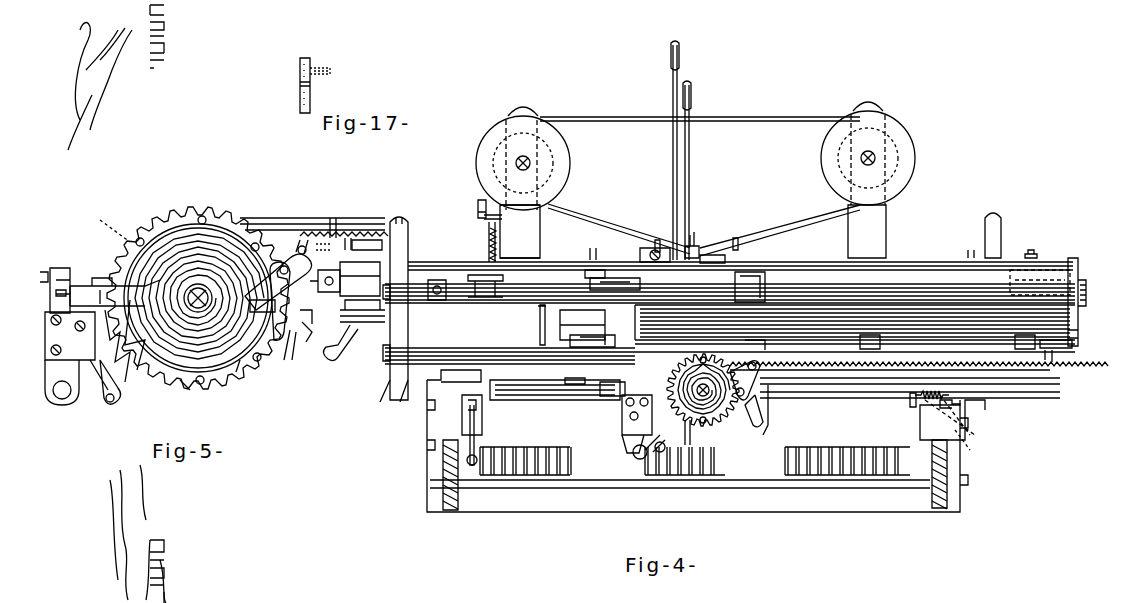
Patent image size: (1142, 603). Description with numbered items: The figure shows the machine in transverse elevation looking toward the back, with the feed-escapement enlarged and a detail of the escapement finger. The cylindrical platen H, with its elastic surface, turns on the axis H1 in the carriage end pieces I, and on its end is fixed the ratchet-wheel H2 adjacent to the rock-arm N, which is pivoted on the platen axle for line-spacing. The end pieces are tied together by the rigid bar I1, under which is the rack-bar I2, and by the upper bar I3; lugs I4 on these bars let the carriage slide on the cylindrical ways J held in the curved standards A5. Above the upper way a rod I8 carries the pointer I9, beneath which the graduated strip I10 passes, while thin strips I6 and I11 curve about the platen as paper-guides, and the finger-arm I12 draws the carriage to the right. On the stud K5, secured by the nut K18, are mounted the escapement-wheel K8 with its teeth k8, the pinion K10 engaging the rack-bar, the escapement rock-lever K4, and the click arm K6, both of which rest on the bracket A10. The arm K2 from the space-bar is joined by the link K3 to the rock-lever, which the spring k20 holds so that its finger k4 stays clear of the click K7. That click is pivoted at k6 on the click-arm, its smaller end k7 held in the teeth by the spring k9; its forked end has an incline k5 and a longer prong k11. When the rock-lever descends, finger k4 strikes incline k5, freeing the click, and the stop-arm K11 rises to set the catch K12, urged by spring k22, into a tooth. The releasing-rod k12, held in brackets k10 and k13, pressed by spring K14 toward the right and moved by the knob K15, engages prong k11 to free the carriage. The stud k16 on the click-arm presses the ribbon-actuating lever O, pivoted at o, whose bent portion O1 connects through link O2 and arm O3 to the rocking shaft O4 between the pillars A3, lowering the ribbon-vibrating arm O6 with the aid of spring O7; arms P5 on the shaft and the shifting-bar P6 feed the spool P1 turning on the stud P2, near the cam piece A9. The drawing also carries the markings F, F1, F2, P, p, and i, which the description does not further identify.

In FIG. 17, the escapement rock-lever K4 is at (302, 62).
In FIG. 5, the escapement rock-lever K4 is at (115, 292).
In FIG. 17, the finger k4 is at (326, 68).
In FIG. 5, the escapement-wheel K8 is at (223, 217).
In FIG. 5, the spring k20 is at (175, 262).
In FIG. 5, the stud K5 is at (206, 280).
In FIG. 5, the stud or finger k16 is at (66, 276).
In FIG. 5, the ribbon-actuating lever O is at (56, 292).
In FIG. 5, the bracket A10 is at (70, 336).
In FIG. 5, the spring k22 is at (55, 403).
In FIG. 5, the pawl K18 is at (95, 400).
In FIG. 5, the catch K12 is at (130, 380).
In FIG. 5, the stop-arm K11 is at (150, 360).
In FIG. 5, the click arm K6 is at (113, 231).
In FIG. 5, the link K3 is at (284, 301).
In FIG. 5, the click K7 is at (356, 217).
In FIG. 5, the rigid bar I1 is at (335, 218).
In FIG. 5, the incline k5 is at (325, 250).
In FIG. 5, the longer prong k11 is at (349, 247).
In FIG. 5, the rack-bar I2 is at (367, 246).
In FIG. 5, the spring k9 is at (329, 287).
In FIG. 5, the pivot k6 is at (314, 330).
In FIG. 5, the smaller end of click k7 is at (288, 345).
In FIG. 5, the pinion K10 is at (345, 352).
In FIG. 5, the teeth k8 is at (240, 378).
In FIG. 4, the spool P1 is at (540, 120).
In FIG. 4, the stud P2 is at (530, 160).
In FIG. 4, the band F2 is at (765, 116).
In FIG. 4, the rod F is at (672, 148).
In FIG. 4, the rod F1 is at (690, 172).
In FIG. 4, the cord P is at (810, 215).
In FIG. 4, the ratchet-wheel H2 is at (675, 243).
In FIG. 4, the curved standard A5 is at (400, 210).
In FIG. 4, the cylindrical way J is at (387, 391).
In FIG. 4, the upright pillar A3 is at (520, 231).
In FIG. 4, the pin p is at (484, 217).
In FIG. 4, the spring O7 is at (490, 246).
In FIG. 4, the rod I8 is at (432, 250).
In FIG. 4, the graduated strip I10 is at (808, 260).
In FIG. 4, the lug I4 is at (760, 268).
In FIG. 4, the cylindrical platen H is at (1075, 322).
In FIG. 4, the platen axis H1 is at (1086, 294).
In FIG. 4, the rigid bar I3 is at (1027, 254).
In FIG. 4, the finger-arm I12 is at (1080, 340).
In FIG. 4, the carriage end piece I is at (1070, 350).
In FIG. 4, the paper-guide strip I6 is at (1025, 349).
In FIG. 4, the pointer I9 is at (710, 255).
In FIG. 4, the paper-guide strip I11 is at (640, 250).
In FIG. 4, the arm O3 is at (578, 248).
In FIG. 4, the rocking shaft O4 is at (600, 260).
In FIG. 4, the ribbon-vibrating arm O6 is at (660, 240).
In FIG. 4, the collar i is at (436, 300).
In FIG. 4, the arm P5 is at (478, 304).
In FIG. 4, the link O2 is at (540, 322).
In FIG. 4, the rock-arm N is at (592, 308).
In FIG. 4, the cam piece or incline A9 is at (697, 441).
In FIG. 4, the shifting-bar P6 is at (481, 430).
In FIG. 4, the bent portion O1 is at (540, 405).
In FIG. 4, the pivot o is at (575, 400).
In FIG. 4, the bracket k10 is at (800, 392).
In FIG. 4, the arm K2 is at (775, 425).
In FIG. 4, the releasing-rod k12 is at (925, 410).
In FIG. 4, the knob K15 is at (977, 415).
In FIG. 4, the spring K14 is at (985, 440).
In FIG. 4, the bracket k13 is at (973, 450).